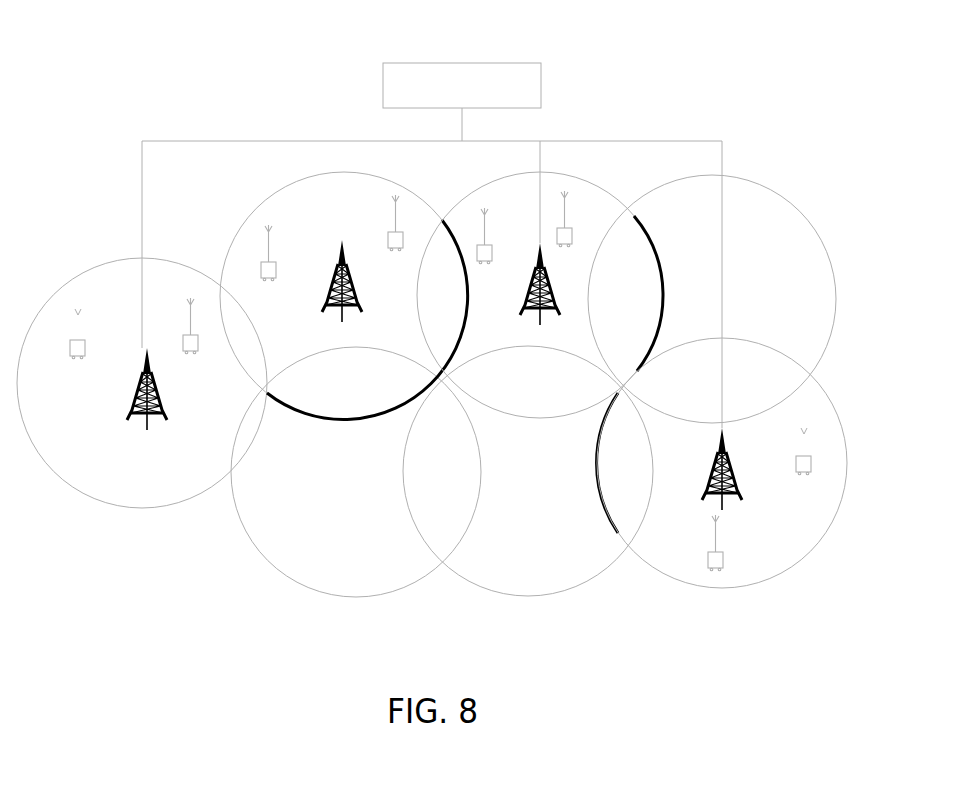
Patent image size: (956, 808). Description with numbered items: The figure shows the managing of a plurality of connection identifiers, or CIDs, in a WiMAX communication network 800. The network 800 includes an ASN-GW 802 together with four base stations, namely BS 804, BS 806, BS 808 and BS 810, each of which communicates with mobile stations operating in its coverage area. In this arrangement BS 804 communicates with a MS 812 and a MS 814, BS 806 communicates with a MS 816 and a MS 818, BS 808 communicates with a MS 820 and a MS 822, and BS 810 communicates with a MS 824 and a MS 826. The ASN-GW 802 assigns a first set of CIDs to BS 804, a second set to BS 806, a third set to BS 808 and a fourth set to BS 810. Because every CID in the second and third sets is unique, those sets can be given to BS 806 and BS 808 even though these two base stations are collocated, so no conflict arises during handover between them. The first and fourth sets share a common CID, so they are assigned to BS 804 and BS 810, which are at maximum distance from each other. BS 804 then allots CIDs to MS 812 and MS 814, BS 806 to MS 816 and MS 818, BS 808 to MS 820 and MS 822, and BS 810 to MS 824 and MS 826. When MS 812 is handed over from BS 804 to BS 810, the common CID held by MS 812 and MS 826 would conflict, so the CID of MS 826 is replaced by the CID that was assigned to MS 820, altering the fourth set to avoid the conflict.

The WiMAX communication network 800 is at (262, 52).
The ASN-GW 802 is at (541, 82).
The BS 804 is at (387, 285).
The BS 806 is at (525, 302).
The BS 808 is at (190, 380).
The BS 810 is at (706, 492).
The MS 812 is at (277, 265).
The MS 814 is at (388, 235).
The MS 816 is at (492, 247).
The MS 818 is at (578, 238).
The MS 820 is at (88, 340).
The MS 822 is at (183, 340).
The MS 824 is at (725, 557).
The MS 826 is at (796, 458).